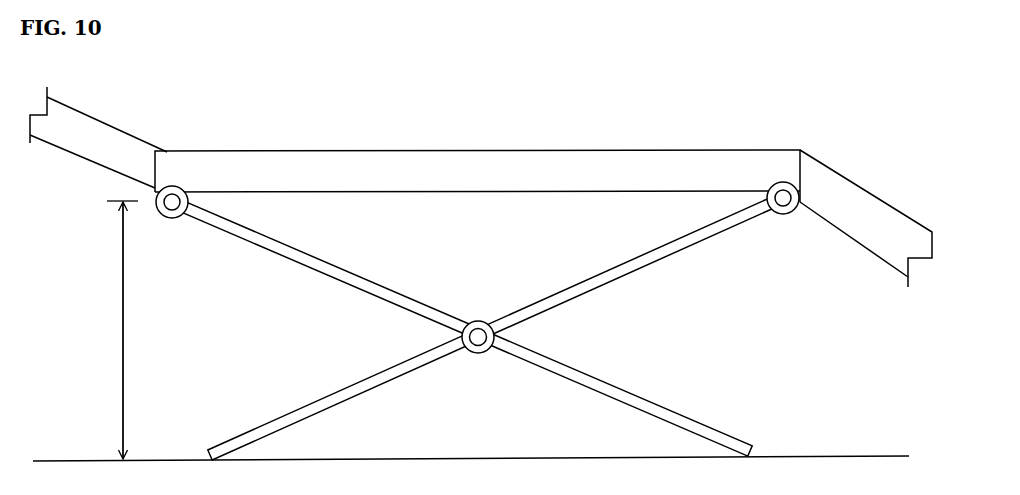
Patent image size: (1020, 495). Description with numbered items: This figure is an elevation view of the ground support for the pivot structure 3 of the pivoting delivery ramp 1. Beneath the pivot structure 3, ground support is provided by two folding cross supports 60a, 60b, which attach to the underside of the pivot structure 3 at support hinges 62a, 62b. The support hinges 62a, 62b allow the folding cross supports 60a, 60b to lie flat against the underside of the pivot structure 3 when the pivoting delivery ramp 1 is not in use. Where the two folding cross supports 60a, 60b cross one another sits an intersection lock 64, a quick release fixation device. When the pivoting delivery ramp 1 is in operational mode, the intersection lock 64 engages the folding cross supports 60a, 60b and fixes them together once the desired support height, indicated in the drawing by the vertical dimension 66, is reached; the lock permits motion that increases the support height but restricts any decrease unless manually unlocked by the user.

The pivoting delivery ramp 1 is at (481, 256).
The pivot structure 3 is at (583, 153).
The folding cross support 60a is at (297, 270).
The folding cross support 60b is at (623, 280).
The support hinge 62a is at (178, 220).
The support hinge 62b is at (780, 218).
The intersection lock 64 is at (478, 320).
The lifting height 66 is at (132, 332).